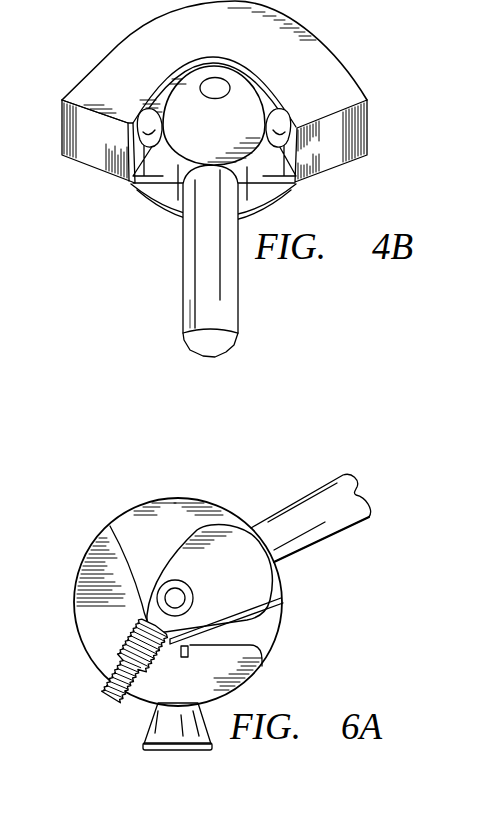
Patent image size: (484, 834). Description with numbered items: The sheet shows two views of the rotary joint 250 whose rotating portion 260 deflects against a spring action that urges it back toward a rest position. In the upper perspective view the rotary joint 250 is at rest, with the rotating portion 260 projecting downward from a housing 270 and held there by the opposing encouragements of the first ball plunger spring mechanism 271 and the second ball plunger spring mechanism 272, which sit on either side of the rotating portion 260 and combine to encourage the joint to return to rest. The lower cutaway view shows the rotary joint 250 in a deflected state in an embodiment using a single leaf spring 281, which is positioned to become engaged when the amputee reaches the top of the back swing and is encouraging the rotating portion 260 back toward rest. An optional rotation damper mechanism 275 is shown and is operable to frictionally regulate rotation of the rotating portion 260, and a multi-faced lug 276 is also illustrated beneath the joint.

In FIG. 4B, the rotary joint 250 is at (83, 52).
In FIG. 6A, the rotary joint 250 is at (113, 485).
In FIG. 4B, the rotating portion 260 is at (198, 257).
In FIG. 6A, the rotating portion 260 is at (322, 547).
In FIG. 4B, the housing 270 is at (329, 70).
In FIG. 6A, the housing 270 is at (86, 549).
In FIG. 4B, the first ball plunger spring mechanism 271 is at (144, 110).
In FIG. 4B, the second ball plunger spring mechanism 272 is at (282, 116).
In FIG. 6A, the rotation damper mechanism 275 is at (124, 697).
In FIG. 6A, the multi-faced lug 276 is at (177, 751).
In FIG. 6A, the leaf spring 281 is at (281, 616).